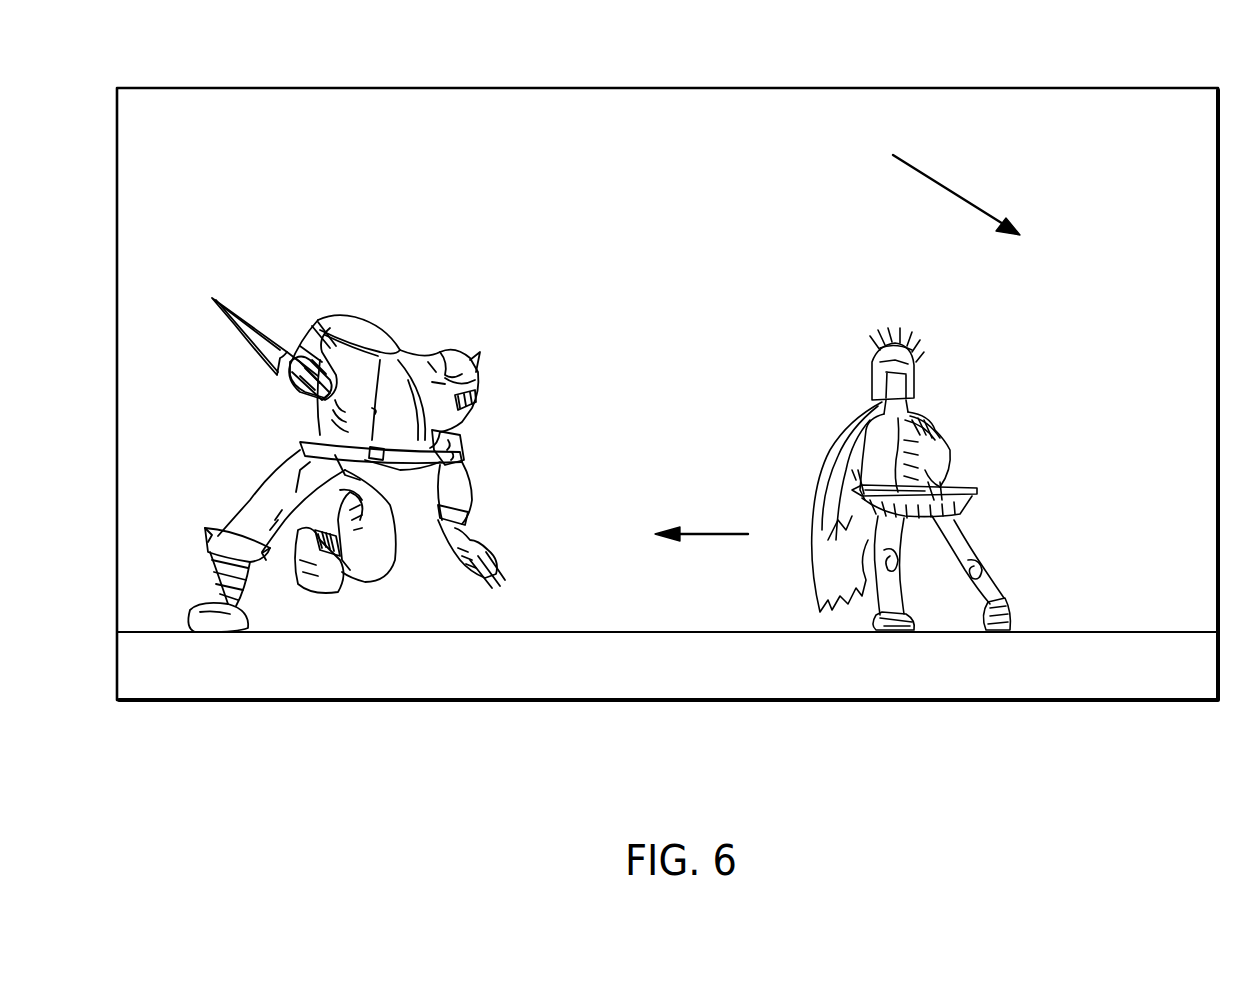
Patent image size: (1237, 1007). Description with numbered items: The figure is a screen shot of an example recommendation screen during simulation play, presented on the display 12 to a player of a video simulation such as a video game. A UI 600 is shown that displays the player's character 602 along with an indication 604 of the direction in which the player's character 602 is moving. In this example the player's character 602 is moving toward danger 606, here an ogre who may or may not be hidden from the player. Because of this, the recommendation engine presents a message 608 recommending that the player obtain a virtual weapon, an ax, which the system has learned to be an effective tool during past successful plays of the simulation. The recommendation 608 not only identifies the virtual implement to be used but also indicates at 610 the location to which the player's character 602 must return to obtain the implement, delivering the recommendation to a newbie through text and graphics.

The display 12 is at (1002, 88).
The UI 600 is at (466, 162).
The player's character 602 is at (963, 450).
The indication 604 is at (712, 536).
The danger 606 is at (235, 330).
The message 608 is at (818, 181).
The location 610 is at (1048, 243).